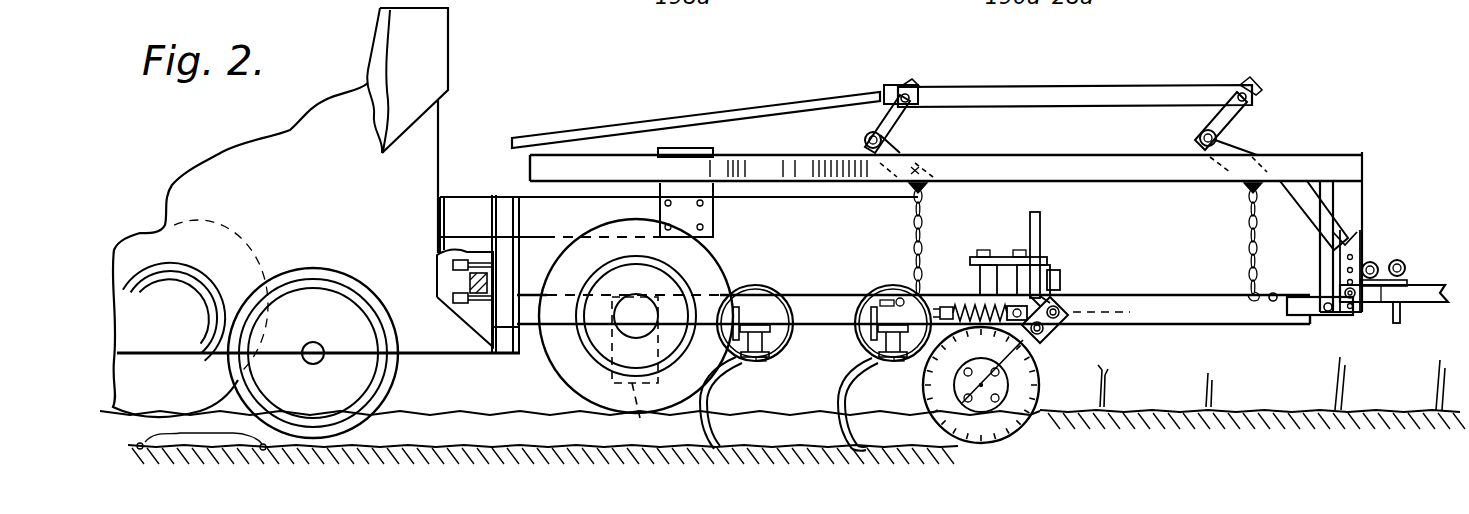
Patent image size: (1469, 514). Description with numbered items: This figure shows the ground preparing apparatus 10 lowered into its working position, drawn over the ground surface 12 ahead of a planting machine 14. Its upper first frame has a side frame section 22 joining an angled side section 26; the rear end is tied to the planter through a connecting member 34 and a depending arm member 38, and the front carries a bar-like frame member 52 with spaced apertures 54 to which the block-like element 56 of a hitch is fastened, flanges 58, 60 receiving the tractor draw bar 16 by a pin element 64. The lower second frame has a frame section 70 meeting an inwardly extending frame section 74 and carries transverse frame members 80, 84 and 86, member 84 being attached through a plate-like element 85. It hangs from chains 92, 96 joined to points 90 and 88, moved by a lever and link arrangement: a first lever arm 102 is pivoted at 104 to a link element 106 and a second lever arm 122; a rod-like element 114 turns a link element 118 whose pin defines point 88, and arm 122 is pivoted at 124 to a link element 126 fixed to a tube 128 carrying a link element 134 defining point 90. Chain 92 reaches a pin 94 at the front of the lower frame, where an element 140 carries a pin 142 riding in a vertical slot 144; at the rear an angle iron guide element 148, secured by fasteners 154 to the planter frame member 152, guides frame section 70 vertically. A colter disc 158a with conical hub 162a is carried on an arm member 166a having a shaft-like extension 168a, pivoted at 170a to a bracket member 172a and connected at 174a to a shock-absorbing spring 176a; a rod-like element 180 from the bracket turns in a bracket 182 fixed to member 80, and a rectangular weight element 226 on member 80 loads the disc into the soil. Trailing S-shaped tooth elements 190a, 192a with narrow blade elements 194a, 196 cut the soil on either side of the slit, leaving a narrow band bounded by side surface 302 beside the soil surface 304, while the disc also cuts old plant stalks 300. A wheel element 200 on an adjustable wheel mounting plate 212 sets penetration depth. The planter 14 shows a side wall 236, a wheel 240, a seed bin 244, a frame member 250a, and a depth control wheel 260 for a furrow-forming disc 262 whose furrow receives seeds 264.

The ground preparing apparatus 10 is at (1372, 96).
The ground surface 12 is at (1184, 375).
The planting machine 14 is at (472, 44).
The draw bar 16 is at (1437, 287).
The side frame section 22 is at (760, 158).
The inwardly angularly extending side section 26 is at (1097, 153).
The connecting member 34 is at (517, 187).
The arm member 38 is at (703, 188).
The frame member 52 is at (1358, 187).
The apertures 54 is at (1357, 247).
The block-like element 56 is at (1365, 300).
The flange 58 is at (1412, 262).
The flange 60 is at (1400, 310).
The pin element 64 is at (1393, 262).
The frame section 70 is at (813, 295).
The inwardly extending frame section 74 is at (1187, 294).
The transverse frame member 80 is at (1007, 257).
The transverse frame member 84 is at (875, 290).
The plate-like element 85 is at (800, 333).
The transverse frame member 86 is at (750, 290).
The point 88 is at (957, 167).
The point 90 is at (1258, 175).
The chain 92 is at (1250, 203).
The rod or pin 94 is at (1273, 302).
The chain 96 is at (913, 213).
The first lever arm 102 is at (583, 105).
The pivot connection 104 is at (930, 60).
The link element 106 is at (878, 93).
The rod-like element 114 is at (863, 136).
The link element 118 is at (903, 143).
The second lever arm 122 is at (1125, 70).
The pivot connection 124 is at (1235, 92).
The link element 126 is at (1233, 117).
The tube 128 is at (1200, 140).
The link element 134 is at (1243, 137).
The element 140 is at (1315, 297).
The pin 142 is at (1330, 310).
The elongated slot 144 is at (1323, 233).
The angle iron guide element 148 is at (440, 205).
The frame member 152 is at (437, 272).
The fasteners 154 is at (440, 244).
The colter disc 158a is at (1037, 390).
The hub 162a is at (925, 386).
The arm member 166a is at (1045, 350).
The shaft-like extension 168a is at (1023, 430).
The pivot connection 170a is at (1062, 335).
The bracket member 172a is at (1035, 344).
The pivot connection 174a is at (1058, 298).
The spring 176a is at (957, 300).
The rod-like element 180 is at (1040, 225).
The bracket 182 is at (1050, 270).
The tooth element 190a is at (851, 377).
The tooth element 192a is at (728, 373).
The blade element 194a is at (838, 433).
The blade element 196 is at (707, 440).
The wheel element 200 is at (557, 362).
The wheel mounting plate 212 is at (630, 425).
The weight element 226 is at (1135, 310).
The side wall 236 is at (317, 113).
The wheel 240 is at (143, 233).
The bin 244 is at (400, 22).
The frame member 250a is at (490, 355).
The wheel element 260 is at (316, 250).
The furrow-forming disc-like element 262 is at (390, 342).
The seeds 264 is at (201, 435).
The plant stalks 300 is at (1104, 390).
The side surface 302 is at (555, 437).
The soil surface 304 is at (492, 438).